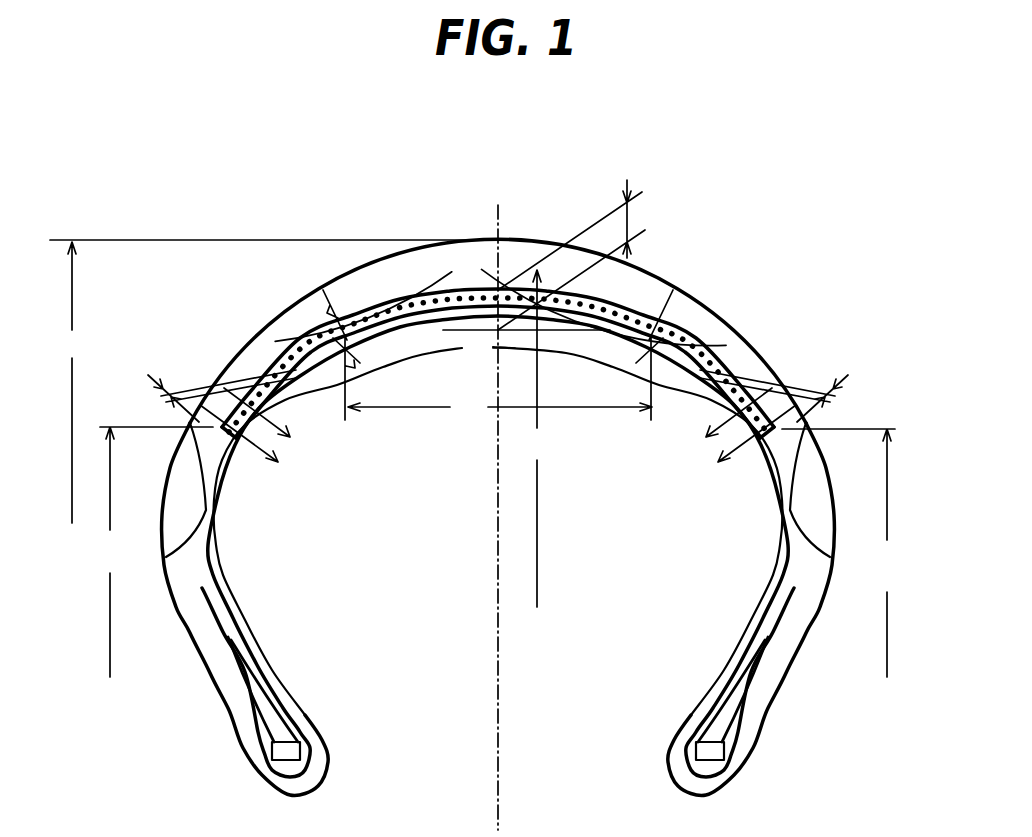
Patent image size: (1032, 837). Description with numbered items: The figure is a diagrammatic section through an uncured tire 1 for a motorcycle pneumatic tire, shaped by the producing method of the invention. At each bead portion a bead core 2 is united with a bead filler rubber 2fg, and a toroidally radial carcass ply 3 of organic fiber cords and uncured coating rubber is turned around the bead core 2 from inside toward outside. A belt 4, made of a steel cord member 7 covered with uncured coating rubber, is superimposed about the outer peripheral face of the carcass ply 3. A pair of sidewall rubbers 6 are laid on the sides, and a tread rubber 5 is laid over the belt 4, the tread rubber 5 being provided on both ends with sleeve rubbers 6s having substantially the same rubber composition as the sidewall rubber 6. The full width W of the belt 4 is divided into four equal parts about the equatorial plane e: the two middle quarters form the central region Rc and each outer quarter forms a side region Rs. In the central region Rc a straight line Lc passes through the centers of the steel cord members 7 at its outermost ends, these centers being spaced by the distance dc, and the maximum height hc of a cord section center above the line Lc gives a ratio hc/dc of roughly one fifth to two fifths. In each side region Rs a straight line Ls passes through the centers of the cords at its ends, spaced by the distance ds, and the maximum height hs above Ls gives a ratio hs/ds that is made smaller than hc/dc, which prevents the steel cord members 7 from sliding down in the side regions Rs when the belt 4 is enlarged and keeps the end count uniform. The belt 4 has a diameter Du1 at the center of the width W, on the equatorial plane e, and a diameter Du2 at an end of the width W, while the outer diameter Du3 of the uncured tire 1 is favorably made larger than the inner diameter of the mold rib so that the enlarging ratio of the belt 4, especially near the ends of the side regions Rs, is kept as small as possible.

The uncured tire 1 is at (442, 237).
The bead core 2 is at (290, 752).
The bead filler rubber 2fg is at (278, 722).
The carcass ply 3 is at (208, 543).
The belt 4 is at (423, 288).
The tread rubber 5 is at (357, 277).
The sidewall rubber 6 is at (183, 572).
The sleeve rubber 6s is at (188, 472).
The steel cord member 7 is at (292, 352).
The central region Rc is at (466, 270).
The side region Rs is at (500, 359).
The equatorial plane e is at (500, 222).
The maximum height in central region hc is at (640, 207).
The maximum height in side region hs is at (152, 395).
The distance between side region end cord centers ds is at (498, 425).
The straight line through side region end cords Ls is at (344, 372).
The straight line through central region end cords Lc is at (443, 333).
The full width of the belt W is at (496, 346).
The distance between central region end cord centers dc is at (500, 408).
The belt diameter at width center Du1 is at (552, 438).
The belt diameter at width end Du2 is at (507, 552).
The outer diameter of the uncured tire Du3 is at (274, 381).